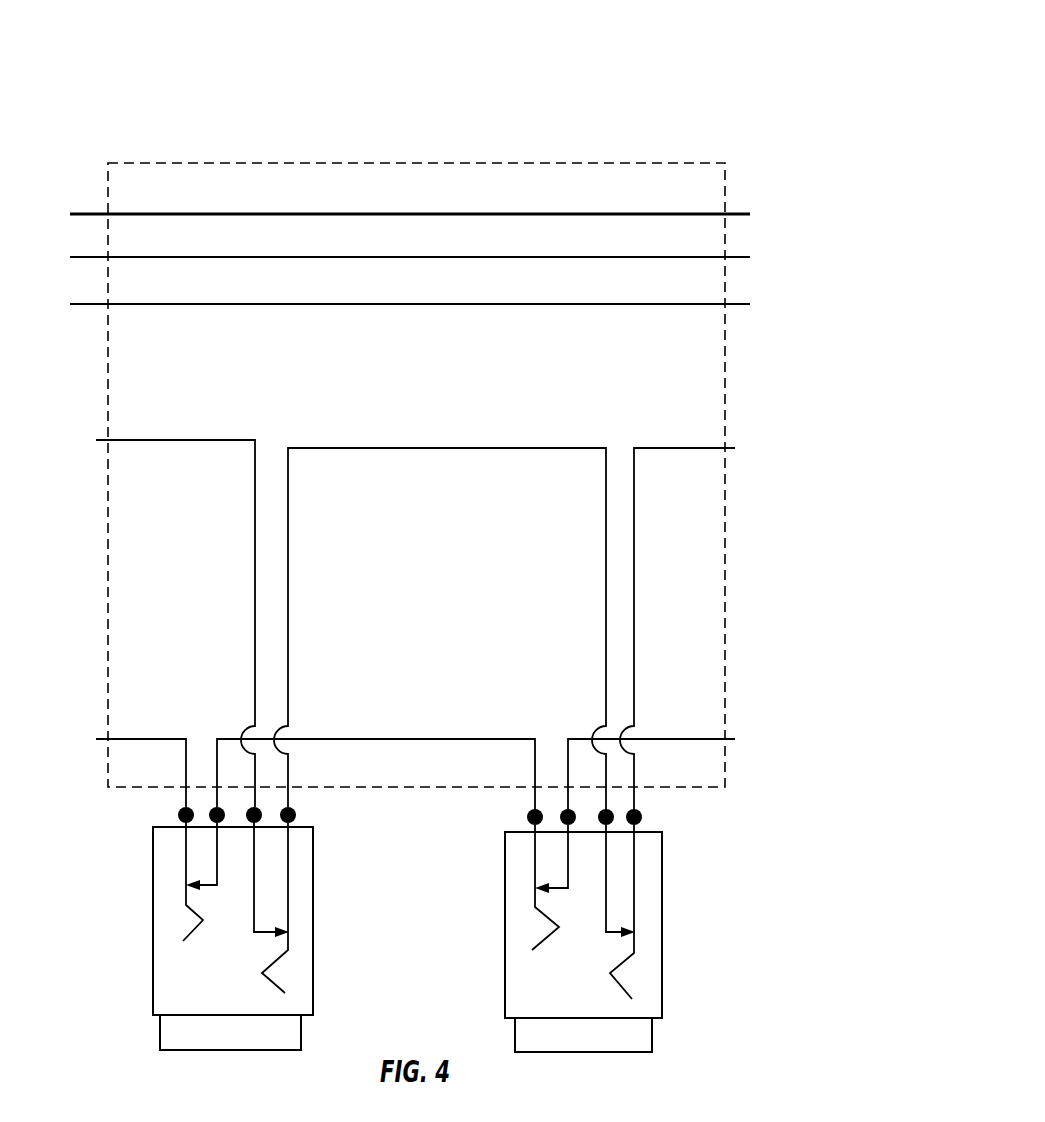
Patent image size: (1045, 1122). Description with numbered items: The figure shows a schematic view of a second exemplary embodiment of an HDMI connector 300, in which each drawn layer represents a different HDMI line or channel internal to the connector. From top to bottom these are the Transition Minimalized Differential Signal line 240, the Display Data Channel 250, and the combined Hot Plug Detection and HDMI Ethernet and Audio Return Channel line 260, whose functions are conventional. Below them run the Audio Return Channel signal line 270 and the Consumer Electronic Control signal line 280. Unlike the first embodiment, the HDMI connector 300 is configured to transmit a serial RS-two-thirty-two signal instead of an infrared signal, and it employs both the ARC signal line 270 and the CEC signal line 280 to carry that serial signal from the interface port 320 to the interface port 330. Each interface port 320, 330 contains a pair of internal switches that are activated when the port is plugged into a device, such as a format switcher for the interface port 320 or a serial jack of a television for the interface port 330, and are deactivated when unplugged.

The HDMI connector 300 is at (776, 112).
The Transition Minimalized Differential Signal (TDMS) 240 is at (727, 197).
The Display Data Channel (DDC) 250 is at (727, 239).
The Hot Plug Detection and HDMI Ethernet and Audio Return Channel (HDP/HEAC) 260 is at (727, 285).
The ARC signal line 270 is at (706, 448).
The CEC signal line 280 is at (683, 738).
The interface port 320 is at (151, 898).
The interface port 330 is at (663, 930).